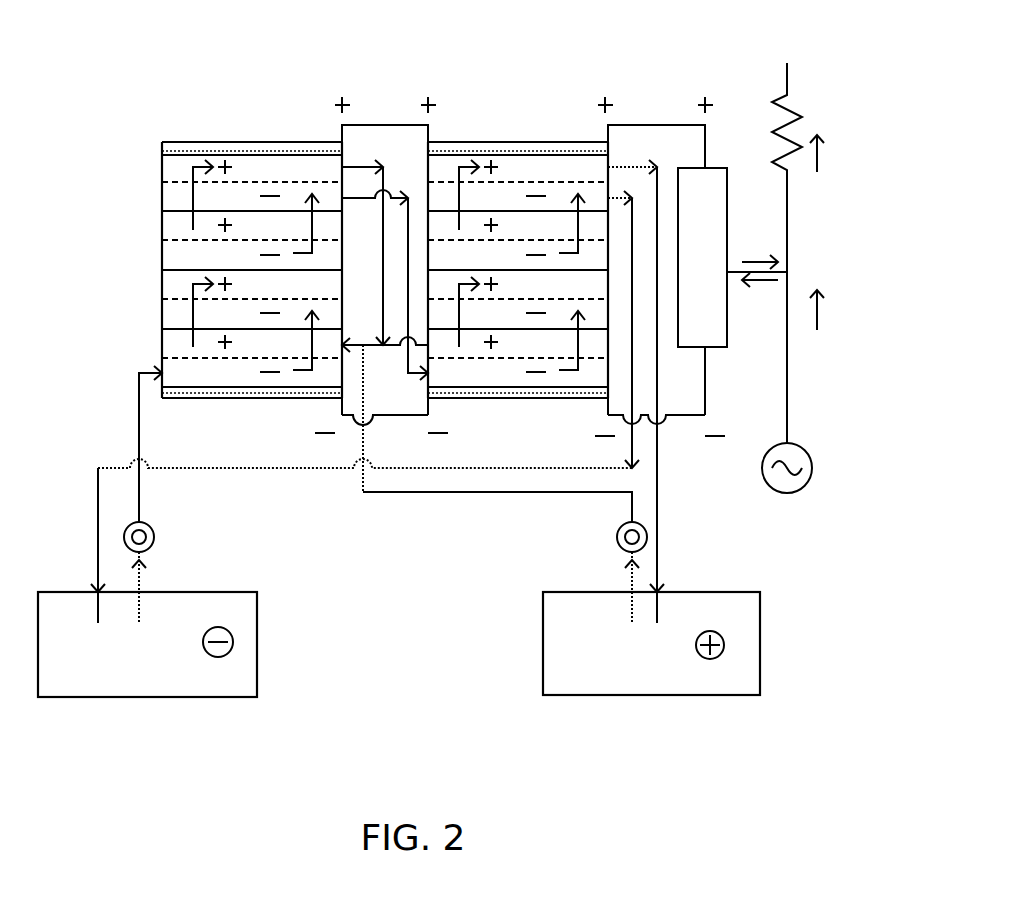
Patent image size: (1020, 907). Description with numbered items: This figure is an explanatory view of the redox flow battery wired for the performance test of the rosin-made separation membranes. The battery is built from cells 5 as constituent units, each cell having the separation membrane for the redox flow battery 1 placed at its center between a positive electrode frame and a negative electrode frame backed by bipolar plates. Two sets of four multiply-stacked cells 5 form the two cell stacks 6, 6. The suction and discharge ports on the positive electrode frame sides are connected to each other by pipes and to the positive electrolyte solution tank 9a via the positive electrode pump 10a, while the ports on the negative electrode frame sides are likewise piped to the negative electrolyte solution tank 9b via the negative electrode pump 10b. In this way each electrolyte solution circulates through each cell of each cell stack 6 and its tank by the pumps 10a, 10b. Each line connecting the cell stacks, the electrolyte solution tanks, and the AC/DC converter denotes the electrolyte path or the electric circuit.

The separation membrane for the redox flow battery 1 is at (246, 180).
The cell 5 is at (150, 183).
The cell stack 6 is at (272, 133).
The positive electrolyte solution tank 9a is at (706, 597).
The negative electrolyte solution tank 9b is at (242, 603).
The positive electrode pump 10a is at (616, 540).
The negative electrode pump 10b is at (155, 538).